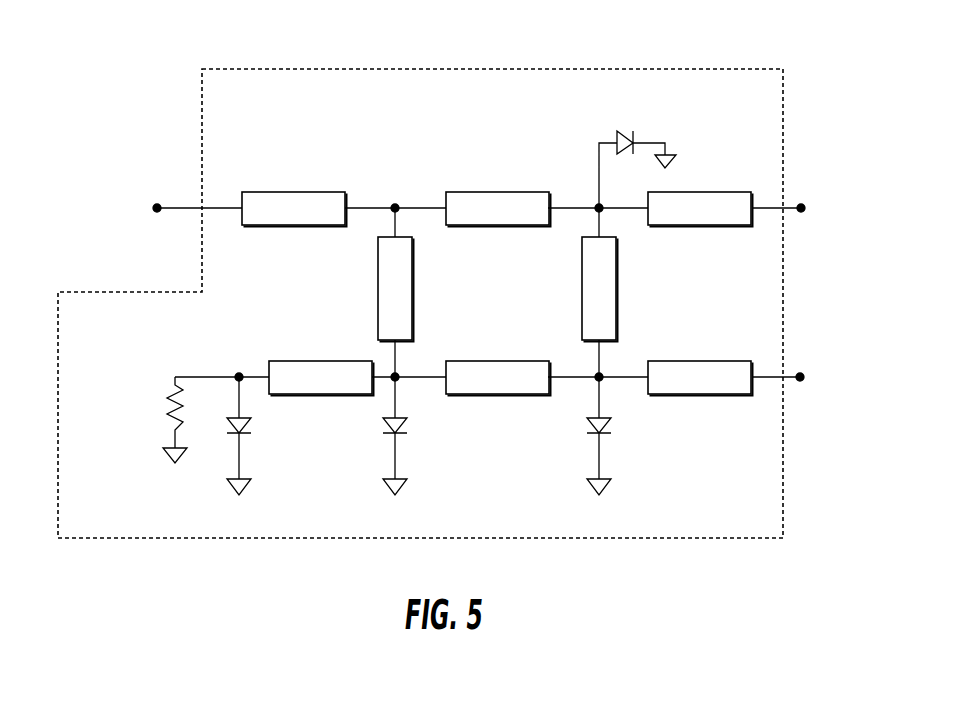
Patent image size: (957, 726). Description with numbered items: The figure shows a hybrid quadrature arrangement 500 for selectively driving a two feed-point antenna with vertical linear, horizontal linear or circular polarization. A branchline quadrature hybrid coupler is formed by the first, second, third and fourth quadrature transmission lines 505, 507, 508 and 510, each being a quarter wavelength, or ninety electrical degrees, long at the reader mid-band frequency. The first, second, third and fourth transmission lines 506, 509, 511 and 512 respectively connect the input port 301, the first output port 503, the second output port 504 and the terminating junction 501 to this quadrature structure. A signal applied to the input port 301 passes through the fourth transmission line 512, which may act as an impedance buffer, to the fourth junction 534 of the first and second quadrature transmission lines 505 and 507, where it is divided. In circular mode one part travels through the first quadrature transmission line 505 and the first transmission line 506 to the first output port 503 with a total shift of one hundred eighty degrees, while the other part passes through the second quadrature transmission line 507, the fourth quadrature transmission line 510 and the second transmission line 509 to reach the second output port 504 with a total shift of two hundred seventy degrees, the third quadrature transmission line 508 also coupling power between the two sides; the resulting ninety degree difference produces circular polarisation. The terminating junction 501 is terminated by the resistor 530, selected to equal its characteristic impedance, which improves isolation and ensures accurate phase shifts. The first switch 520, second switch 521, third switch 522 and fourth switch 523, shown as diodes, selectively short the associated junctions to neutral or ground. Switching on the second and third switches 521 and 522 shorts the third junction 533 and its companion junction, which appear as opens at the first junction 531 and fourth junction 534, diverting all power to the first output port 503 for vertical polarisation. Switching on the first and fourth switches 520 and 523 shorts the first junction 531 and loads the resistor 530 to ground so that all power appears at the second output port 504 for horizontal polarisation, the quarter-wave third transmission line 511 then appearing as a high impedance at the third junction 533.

The hybrid quadrature arrangement 500 is at (557, 69).
The input port 301 is at (156, 204).
The terminating junction 501 is at (175, 377).
The first output port 503 is at (801, 204).
The second output port 504 is at (800, 373).
The first quadrature transmission line 505 is at (461, 192).
The first transmission line 506 is at (700, 192).
The second quadrature transmission line 507 is at (378, 300).
The third quadrature transmission line 508 is at (582, 285).
The second transmission line 509 is at (680, 361).
The fourth quadrature transmission line 510 is at (475, 361).
The third transmission line 511 is at (312, 361).
The fourth transmission line 512 is at (272, 192).
The first switch 520 is at (619, 134).
The second switch 521 is at (606, 422).
The third switch 522 is at (400, 422).
The fourth switch 523 is at (247, 422).
The resistor 530 is at (170, 405).
The first junction 531 is at (603, 212).
The third junction 533 is at (400, 383).
The fourth junction 534 is at (395, 205).